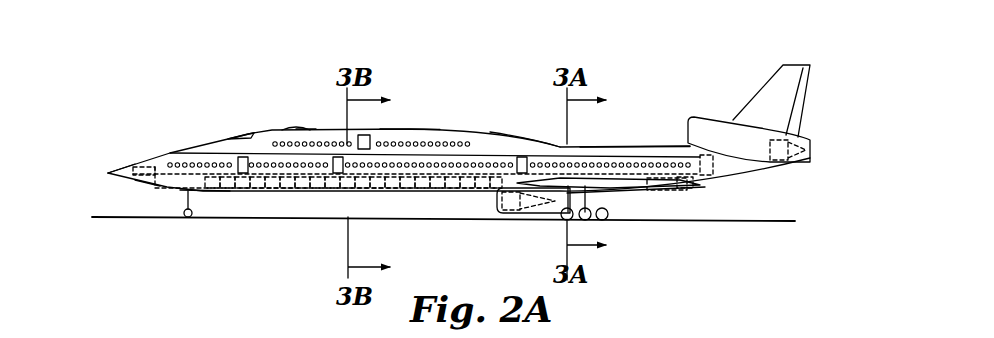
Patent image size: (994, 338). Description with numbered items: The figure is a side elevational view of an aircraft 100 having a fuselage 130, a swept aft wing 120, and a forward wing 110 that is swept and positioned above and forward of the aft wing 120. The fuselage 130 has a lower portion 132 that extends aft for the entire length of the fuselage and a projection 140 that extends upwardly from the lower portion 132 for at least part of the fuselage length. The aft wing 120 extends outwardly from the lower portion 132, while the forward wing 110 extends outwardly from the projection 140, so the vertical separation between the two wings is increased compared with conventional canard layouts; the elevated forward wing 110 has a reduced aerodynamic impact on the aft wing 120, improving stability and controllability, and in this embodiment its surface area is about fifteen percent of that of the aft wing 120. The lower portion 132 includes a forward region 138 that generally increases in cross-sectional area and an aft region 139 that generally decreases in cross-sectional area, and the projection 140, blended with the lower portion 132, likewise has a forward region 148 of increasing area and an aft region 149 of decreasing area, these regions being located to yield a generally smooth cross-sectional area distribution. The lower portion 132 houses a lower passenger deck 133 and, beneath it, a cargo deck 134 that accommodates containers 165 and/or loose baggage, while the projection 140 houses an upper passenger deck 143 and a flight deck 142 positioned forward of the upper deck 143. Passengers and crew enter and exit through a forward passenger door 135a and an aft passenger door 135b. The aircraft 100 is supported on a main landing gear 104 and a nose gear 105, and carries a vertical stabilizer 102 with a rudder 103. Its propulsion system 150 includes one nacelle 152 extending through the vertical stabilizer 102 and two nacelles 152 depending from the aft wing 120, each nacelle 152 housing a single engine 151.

The aircraft 100 is at (614, 51).
The vertical stabilizer 102 is at (752, 92).
The rudder 103 is at (812, 88).
The main landing gear 104 is at (621, 205).
The nose gear 105 is at (188, 218).
The forward wing 110 is at (306, 128).
The aft wing 120 is at (657, 172).
The fuselage 130 is at (615, 144).
The lower portion 132 is at (122, 150).
The lower passenger deck 133 is at (163, 171).
The cargo deck 134 is at (204, 192).
The forward passenger door 135a is at (262, 173).
The aft passenger door 135b is at (338, 173).
The forward region 138 is at (158, 148).
The aft region 139 is at (762, 195).
The projection 140 is at (207, 140).
The flight deck 142 is at (272, 130).
The upper passenger deck 143 is at (410, 128).
The forward region 148 is at (257, 122).
The aft region 149 is at (517, 131).
The propulsion system 150 is at (741, 195).
The engine 151 is at (790, 160).
The nacelle 152 is at (798, 138).
The containers 165 is at (408, 195).